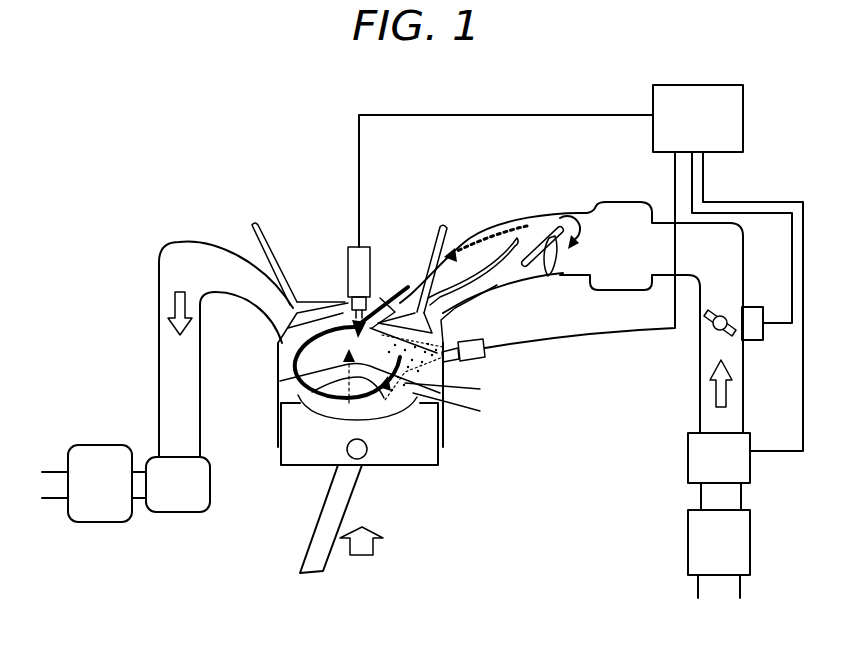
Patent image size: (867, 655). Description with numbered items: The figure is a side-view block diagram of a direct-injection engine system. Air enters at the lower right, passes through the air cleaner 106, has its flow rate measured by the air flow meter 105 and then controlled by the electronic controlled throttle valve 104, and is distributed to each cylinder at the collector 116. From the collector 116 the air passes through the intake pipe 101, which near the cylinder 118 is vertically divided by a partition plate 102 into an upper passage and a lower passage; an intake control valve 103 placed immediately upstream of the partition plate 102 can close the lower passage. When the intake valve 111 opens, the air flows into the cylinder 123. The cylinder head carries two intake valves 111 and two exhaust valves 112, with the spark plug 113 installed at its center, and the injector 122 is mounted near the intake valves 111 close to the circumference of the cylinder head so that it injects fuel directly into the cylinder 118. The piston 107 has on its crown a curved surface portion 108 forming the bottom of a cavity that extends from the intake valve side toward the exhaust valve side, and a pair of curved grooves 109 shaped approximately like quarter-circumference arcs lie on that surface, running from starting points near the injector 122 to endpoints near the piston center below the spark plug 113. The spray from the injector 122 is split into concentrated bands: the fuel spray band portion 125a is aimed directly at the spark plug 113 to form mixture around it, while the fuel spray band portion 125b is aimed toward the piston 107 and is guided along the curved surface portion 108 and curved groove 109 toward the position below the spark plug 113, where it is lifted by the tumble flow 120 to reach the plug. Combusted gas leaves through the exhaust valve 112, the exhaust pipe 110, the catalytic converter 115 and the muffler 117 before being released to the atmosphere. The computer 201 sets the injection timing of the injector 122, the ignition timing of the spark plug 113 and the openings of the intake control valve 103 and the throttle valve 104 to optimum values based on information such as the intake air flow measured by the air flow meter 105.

The computer 201 is at (743, 117).
The collector 116 is at (623, 208).
The electronic controlled throttle valve 104 is at (750, 341).
The air flow meter 105 is at (751, 470).
The air cleaner 106 is at (751, 553).
The muffler 117 is at (98, 446).
The catalytic converter 115 is at (176, 513).
The exhaust pipe 110 is at (173, 265).
The cylinder 123 is at (280, 345).
The tumble flow 120 is at (275, 382).
The exhaust valve 112 is at (263, 223).
The spark plug 113 is at (346, 245).
The cylinder 118 is at (337, 295).
The intake valve 111 is at (443, 225).
The partition plate 102 is at (498, 232).
The intake control valve 103 is at (537, 277).
The intake pipe 101 is at (587, 212).
The injector 122 is at (469, 341).
The fuel spray band portion 125a is at (467, 387).
The fuel spray band portion 125b is at (473, 409).
The curved surface portion 108 is at (417, 425).
The curved groove 109 is at (362, 430).
The piston 107 is at (417, 460).